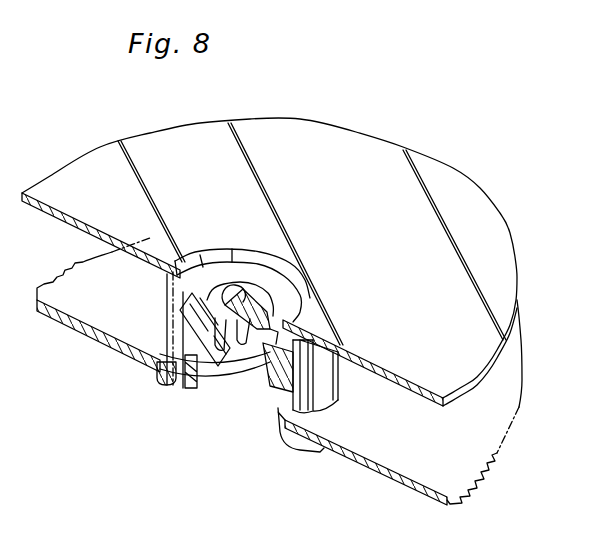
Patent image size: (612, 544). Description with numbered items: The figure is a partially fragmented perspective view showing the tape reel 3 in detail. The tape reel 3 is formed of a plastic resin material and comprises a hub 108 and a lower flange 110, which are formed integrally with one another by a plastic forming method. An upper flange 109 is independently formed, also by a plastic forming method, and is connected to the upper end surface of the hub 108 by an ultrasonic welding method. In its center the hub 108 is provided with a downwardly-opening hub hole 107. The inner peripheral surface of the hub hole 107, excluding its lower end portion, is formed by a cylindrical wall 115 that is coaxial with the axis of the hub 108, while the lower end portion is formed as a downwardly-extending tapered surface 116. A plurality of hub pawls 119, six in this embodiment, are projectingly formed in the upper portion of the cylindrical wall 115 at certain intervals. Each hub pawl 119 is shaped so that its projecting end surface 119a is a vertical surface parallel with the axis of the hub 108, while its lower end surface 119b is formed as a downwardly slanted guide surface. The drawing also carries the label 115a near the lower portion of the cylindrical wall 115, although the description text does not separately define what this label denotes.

The tape reel 3 is at (355, 163).
The hub hole 107 is at (265, 402).
The hub 108 is at (323, 406).
The upper flange 109 is at (408, 388).
The lower flange 110 is at (398, 480).
The cylindrical wall 115 is at (240, 346).
The hook portion 115a is at (278, 412).
The tapered surface 116 is at (175, 358).
The hub pawl 119 is at (228, 372).
The projecting end surface 119a is at (173, 320).
The lower end surface 119b is at (158, 378).